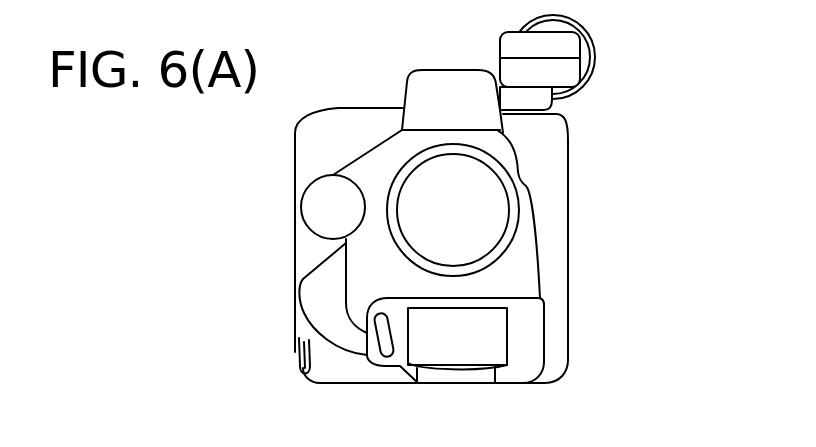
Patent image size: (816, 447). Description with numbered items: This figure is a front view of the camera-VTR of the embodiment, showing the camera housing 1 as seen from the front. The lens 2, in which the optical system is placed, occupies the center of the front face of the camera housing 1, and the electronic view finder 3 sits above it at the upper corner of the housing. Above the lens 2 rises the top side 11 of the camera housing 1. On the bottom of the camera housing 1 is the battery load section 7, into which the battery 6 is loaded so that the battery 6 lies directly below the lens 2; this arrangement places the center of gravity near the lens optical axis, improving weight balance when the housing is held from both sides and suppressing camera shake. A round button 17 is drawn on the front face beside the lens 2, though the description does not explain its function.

The camera housing 1 is at (555, 133).
The lens 2 is at (517, 200).
The electronic view finder 3 is at (573, 42).
The battery 6 is at (448, 362).
The battery load section 7 is at (513, 373).
The top side of the camera housing 11 is at (424, 82).
The button 17 is at (311, 209).